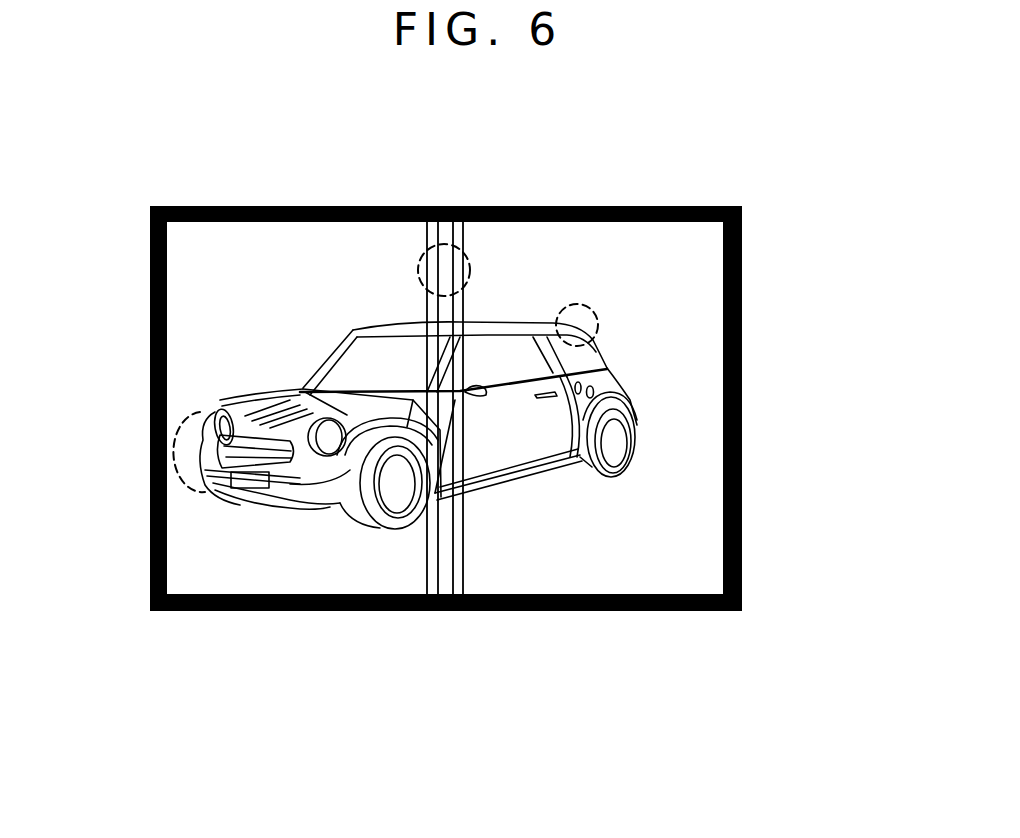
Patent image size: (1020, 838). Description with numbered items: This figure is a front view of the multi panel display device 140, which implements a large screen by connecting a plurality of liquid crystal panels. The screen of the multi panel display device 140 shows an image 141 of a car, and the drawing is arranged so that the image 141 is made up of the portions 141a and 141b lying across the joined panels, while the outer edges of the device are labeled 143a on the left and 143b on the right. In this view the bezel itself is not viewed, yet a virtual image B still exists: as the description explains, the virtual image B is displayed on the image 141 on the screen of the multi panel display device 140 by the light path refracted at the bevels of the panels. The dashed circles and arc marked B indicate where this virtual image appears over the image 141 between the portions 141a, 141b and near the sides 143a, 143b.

The multi panel display device 140 is at (775, 237).
The image 141 is at (418, 529).
The first image portion 141a is at (312, 492).
The second image portion 141b is at (487, 460).
The left bezel of display 143a is at (150, 323).
The right bezel of display 143b is at (740, 322).
The virtual image B is at (419, 262).